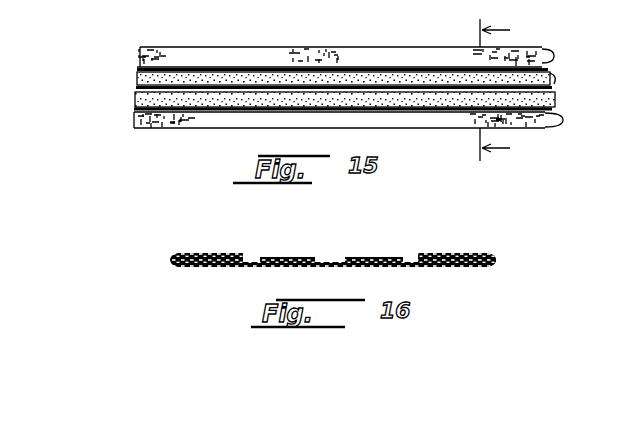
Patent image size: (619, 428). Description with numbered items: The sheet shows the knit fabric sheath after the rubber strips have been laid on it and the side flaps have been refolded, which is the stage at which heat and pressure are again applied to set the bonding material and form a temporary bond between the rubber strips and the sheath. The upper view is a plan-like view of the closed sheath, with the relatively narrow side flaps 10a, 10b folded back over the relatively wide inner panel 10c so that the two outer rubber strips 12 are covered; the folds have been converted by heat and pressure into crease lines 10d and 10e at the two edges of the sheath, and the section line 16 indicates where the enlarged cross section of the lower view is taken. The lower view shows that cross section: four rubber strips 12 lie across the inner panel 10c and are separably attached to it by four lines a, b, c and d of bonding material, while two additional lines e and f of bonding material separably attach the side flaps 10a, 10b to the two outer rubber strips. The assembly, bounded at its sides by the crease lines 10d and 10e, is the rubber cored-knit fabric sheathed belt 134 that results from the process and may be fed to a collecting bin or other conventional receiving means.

In FIG. 15, the side flap 10a is at (207, 120).
In FIG. 16, the side flap 10a is at (229, 252).
In FIG. 15, the side flap 10b is at (226, 62).
In FIG. 16, the side flap 10b is at (425, 252).
In FIG. 15, the inner panel 10c is at (153, 88).
In FIG. 16, the inner panel 10c is at (252, 258).
In FIG. 15, the crease line 10d is at (464, 131).
In FIG. 16, the crease line 10d is at (172, 265).
In FIG. 15, the crease line 10e is at (438, 39).
In FIG. 16, the crease line 10e is at (493, 258).
In FIG. 15, the rubber strip 12 is at (556, 110).
In FIG. 16, the rubber strip 12 is at (224, 268).
In FIG. 15, the section line 16 is at (497, 92).
In FIG. 15, the rubber cored-knit fabric sheathed belt 134 is at (364, 35).
In FIG. 16, the rubber cored-knit fabric sheathed belt 134 is at (192, 281).
In FIG. 16, the line of bonding material a is at (466, 268).
In FIG. 16, the line of bonding material b is at (375, 267).
In FIG. 16, the line of bonding material c is at (273, 268).
In FIG. 16, the line of bonding material d is at (215, 267).
In FIG. 16, the line of bonding material e is at (470, 250).
In FIG. 16, the line of bonding material f is at (193, 252).